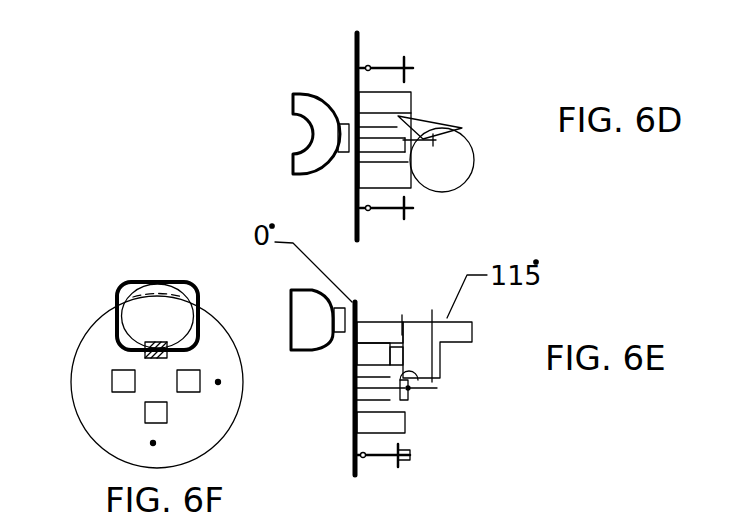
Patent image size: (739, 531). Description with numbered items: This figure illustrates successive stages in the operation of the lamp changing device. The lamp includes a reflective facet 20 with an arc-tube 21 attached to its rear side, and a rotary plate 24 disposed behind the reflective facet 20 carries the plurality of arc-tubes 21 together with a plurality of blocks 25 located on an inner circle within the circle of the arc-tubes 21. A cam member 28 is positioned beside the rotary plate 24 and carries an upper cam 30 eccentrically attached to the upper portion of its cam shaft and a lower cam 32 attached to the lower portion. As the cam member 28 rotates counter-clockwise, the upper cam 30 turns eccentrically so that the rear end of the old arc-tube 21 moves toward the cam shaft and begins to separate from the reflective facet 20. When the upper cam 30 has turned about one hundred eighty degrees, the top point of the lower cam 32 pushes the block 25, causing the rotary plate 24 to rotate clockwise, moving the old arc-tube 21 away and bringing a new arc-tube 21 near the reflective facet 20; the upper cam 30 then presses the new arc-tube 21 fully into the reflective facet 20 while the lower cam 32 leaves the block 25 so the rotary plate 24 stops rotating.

In FIG. 6D, the reflective facet 20 is at (290, 108).
In FIG. 6E, the reflective facet 20 is at (290, 330).
In FIG. 6F, the reflective facet 20 is at (123, 300).
In FIG. 6D, the arc-tube 21 is at (380, 142).
In FIG. 6E, the arc-tube 21 is at (380, 320).
In FIG. 6F, the arc-tube 21 is at (153, 313).
In FIG. 6D, the rotary plate 24 is at (360, 50).
In FIG. 6E, the rotary plate 24 is at (352, 448).
In FIG. 6F, the rotary plate 24 is at (83, 357).
In FIG. 6D, the block 25 is at (352, 124).
In FIG. 6E, the block 25 is at (362, 353).
In FIG. 6F, the block 25 is at (162, 348).
In FIG. 6D, the cam member 28 is at (468, 137).
In FIG. 6E, the cam member 28 is at (447, 348).
In FIG. 6D, the upper cam 30 is at (463, 176).
In FIG. 6E, the upper cam 30 is at (472, 328).
In FIG. 6D, the lower cam 32 is at (420, 118).
In FIG. 6E, the lower cam 32 is at (413, 378).